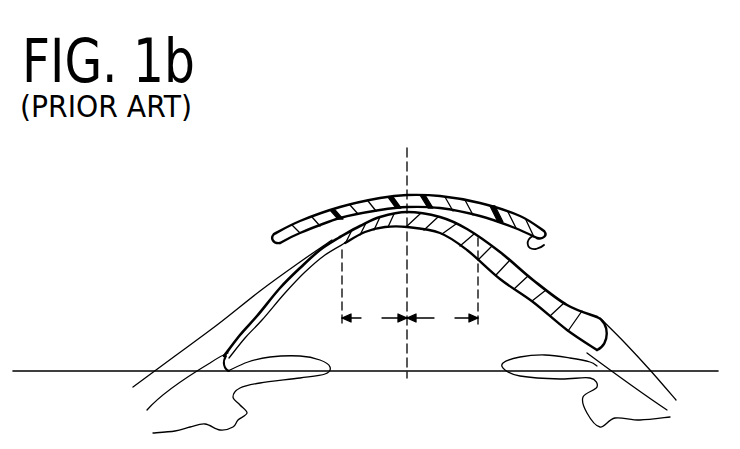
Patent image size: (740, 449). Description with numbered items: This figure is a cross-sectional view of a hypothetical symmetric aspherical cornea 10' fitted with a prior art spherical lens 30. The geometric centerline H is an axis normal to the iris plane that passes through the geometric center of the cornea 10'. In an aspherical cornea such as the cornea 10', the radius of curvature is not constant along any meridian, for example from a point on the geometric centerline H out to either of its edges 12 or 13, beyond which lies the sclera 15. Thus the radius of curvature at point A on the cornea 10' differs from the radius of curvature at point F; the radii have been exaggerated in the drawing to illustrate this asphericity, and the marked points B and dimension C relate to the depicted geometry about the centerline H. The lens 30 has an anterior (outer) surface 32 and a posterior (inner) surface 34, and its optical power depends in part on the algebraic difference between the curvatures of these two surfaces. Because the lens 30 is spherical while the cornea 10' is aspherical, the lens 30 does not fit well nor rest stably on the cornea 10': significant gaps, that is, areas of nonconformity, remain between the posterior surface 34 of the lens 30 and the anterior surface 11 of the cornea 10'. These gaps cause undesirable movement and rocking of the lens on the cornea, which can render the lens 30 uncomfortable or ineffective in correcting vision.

The symmetric aspherical cornea 10' is at (422, 286).
The anterior surface of the cornea 11 is at (263, 279).
The edge of the cornea 12 is at (229, 313).
The edge of the cornea 13 is at (656, 331).
The sclera 15 is at (385, 374).
The spherical lens 30 is at (442, 202).
The anterior surface of the lens 32 is at (300, 194).
The posterior surface of the lens 34 is at (577, 216).
The point A on the cornea A is at (346, 240).
The region B is at (458, 281).
The distance C is at (410, 318).
The point F on the cornea F is at (267, 300).
The geometric centerline H is at (453, 243).